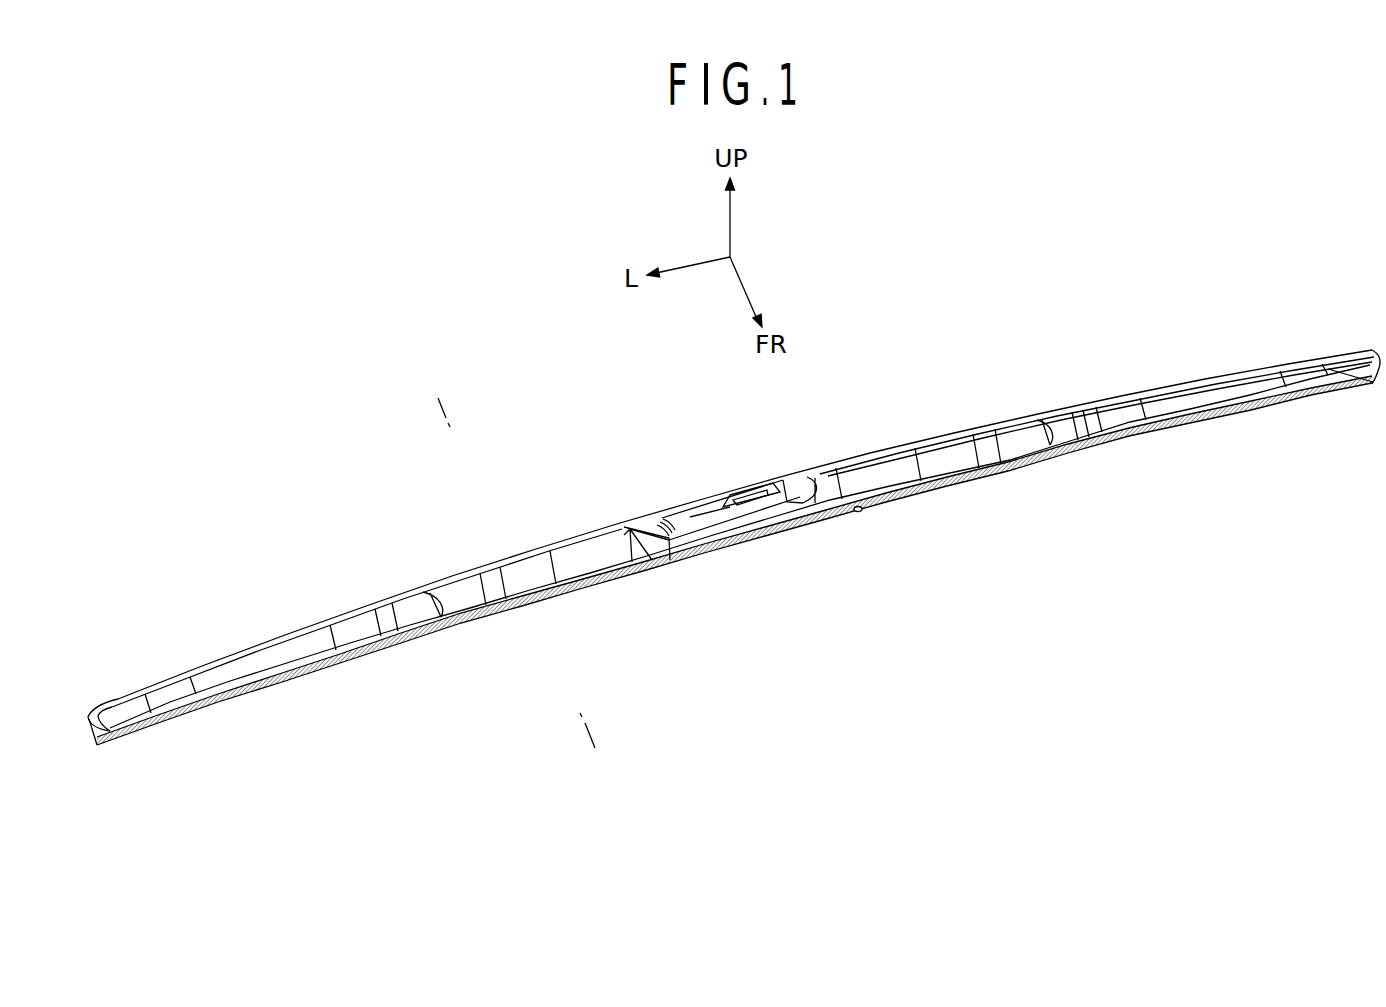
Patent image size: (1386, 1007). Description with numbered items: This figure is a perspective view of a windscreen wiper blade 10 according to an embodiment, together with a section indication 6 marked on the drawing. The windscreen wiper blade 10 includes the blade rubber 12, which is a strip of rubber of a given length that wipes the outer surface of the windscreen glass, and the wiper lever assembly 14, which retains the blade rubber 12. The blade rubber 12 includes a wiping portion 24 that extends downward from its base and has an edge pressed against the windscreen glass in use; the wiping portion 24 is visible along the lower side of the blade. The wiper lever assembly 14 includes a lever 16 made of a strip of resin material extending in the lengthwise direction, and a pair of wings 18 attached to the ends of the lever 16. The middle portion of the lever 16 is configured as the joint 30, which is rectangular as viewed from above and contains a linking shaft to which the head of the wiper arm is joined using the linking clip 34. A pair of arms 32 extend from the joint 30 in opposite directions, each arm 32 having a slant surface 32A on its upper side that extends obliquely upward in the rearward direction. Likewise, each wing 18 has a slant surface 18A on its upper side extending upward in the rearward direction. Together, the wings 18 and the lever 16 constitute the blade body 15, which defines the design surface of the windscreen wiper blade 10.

The windscreen wiper blade 10 is at (1042, 308).
The blade rubber 12 is at (734, 560).
The wiper lever assembly 14 is at (868, 450).
The blade body 15 is at (443, 457).
The lever 16 is at (465, 566).
The wings 18 is at (385, 594).
The slant surface 18A is at (287, 648).
The wiping portion 24 is at (98, 746).
The joint 30 is at (650, 515).
The arms 32 is at (943, 438).
The slant surface 32A is at (893, 480).
The linking clip 34 is at (703, 510).
The section line of FIG. 6 is at (490, 385).